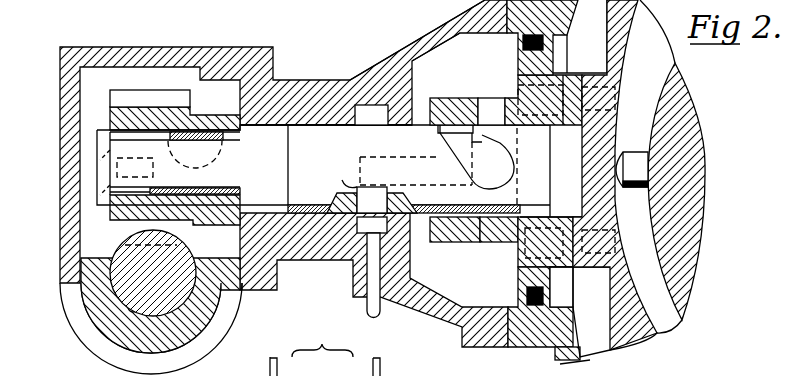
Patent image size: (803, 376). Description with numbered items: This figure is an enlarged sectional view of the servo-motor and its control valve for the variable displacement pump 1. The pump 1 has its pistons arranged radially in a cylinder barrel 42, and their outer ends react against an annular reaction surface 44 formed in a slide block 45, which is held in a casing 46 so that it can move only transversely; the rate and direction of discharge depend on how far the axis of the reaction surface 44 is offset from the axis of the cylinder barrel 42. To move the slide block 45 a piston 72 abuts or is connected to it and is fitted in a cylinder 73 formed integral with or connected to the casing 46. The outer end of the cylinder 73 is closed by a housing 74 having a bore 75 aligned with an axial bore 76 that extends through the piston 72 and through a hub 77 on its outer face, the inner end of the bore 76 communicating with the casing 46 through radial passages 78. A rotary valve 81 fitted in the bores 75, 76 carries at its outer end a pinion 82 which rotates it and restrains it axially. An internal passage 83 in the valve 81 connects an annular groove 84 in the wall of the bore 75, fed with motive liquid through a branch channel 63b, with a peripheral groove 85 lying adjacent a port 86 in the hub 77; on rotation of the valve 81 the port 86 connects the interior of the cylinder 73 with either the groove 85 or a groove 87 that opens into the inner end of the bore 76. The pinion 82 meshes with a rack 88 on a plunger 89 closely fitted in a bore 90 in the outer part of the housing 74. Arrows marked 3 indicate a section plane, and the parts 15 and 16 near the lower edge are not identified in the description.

The housing 74 is at (259, 50).
The cylinder 73 is at (470, 58).
The bore 75 is at (310, 128).
The annular groove 84 is at (368, 115).
The extension or hub 77 is at (449, 108).
The port 86 is at (492, 108).
The rotary valve 81 is at (323, 171).
The internal passage 83 is at (372, 172).
The groove 85 is at (477, 161).
The groove 87 is at (540, 132).
The cylinder barrel 42 is at (700, 247).
The slide block 45 is at (648, 337).
The radial passages 78 is at (573, 266).
The piston 72 is at (522, 278).
The axial bore 76 is at (480, 243).
The branch channel 63b is at (370, 304).
The pinion 82 is at (157, 100).
The rack 88 is at (148, 241).
The piston or plunger 89 is at (153, 273).
The bore 90 is at (122, 302).
The section line 3- 3 is at (55, 123).
The pump 1 is at (322, 342).
The end portion 15 is at (270, 367).
The annular reaction surface 44 is at (345, 369).
The end portion 16 is at (380, 368).
The casing 46 is at (553, 360).